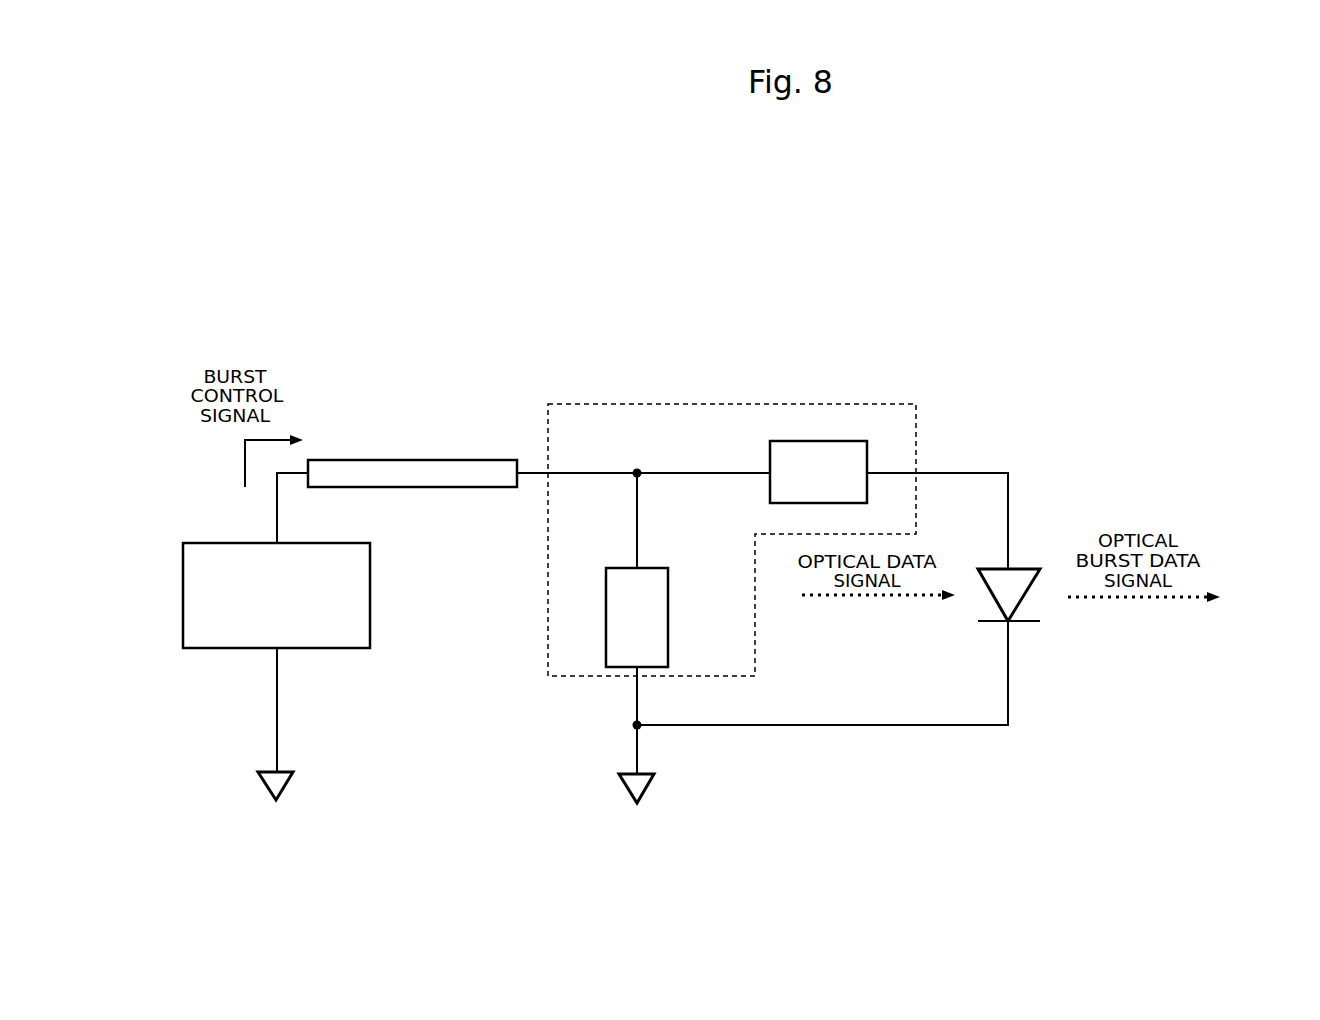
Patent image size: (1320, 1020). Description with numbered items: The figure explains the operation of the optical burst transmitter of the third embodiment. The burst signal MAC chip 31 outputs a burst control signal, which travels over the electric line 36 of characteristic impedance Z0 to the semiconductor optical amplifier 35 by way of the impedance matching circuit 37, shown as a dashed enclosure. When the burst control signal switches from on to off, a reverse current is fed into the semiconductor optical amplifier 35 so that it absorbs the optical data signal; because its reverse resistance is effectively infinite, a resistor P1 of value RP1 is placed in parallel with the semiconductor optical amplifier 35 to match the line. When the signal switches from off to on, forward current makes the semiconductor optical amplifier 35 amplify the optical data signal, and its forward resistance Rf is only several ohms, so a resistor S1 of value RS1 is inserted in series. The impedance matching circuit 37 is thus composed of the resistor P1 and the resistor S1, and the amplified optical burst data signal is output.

The MAC chip for burst signals 31 is at (335, 543).
The semiconductor optical amplifier 35 is at (1022, 583).
The electric line 36 is at (481, 461).
The impedance matching circuit 37 is at (548, 590).
The resistor S1 is at (836, 441).
The resistor P1 is at (655, 568).
The forward-direction resistance Rf is at (1014, 612).